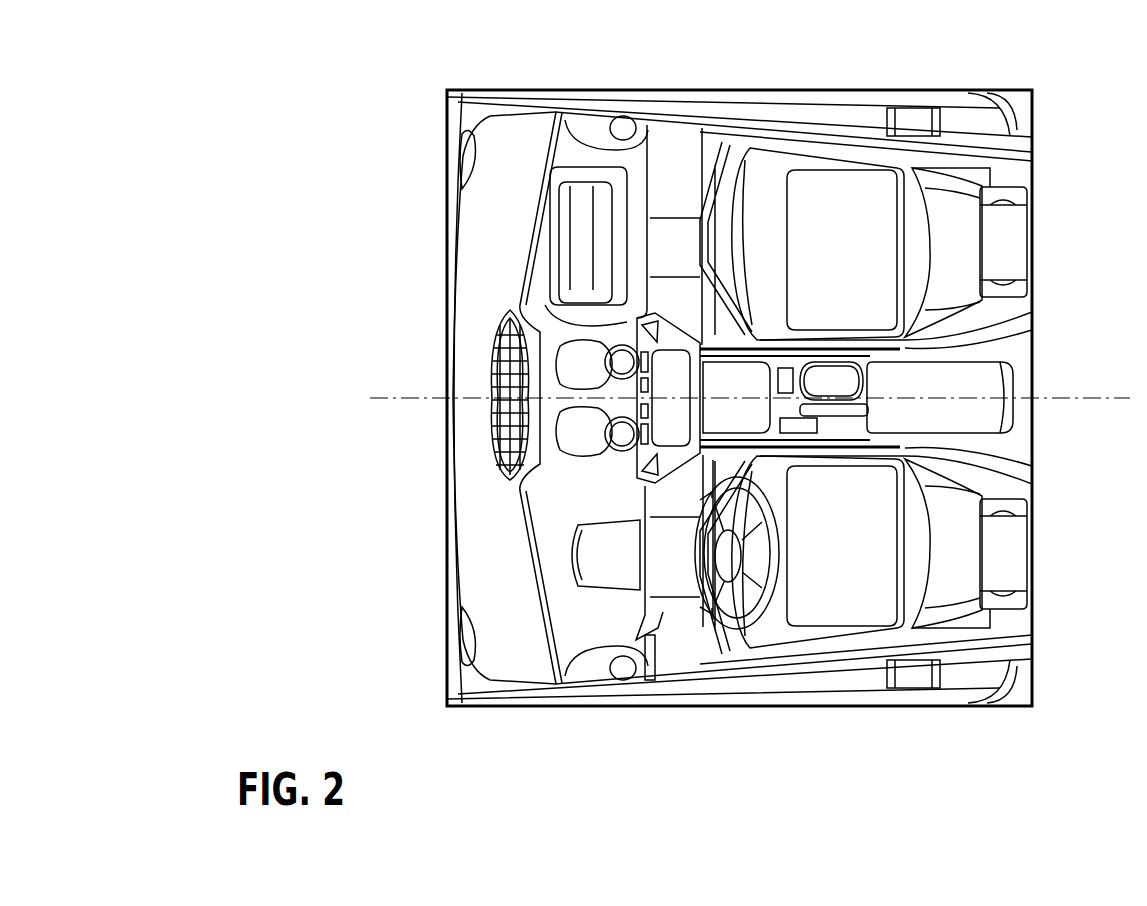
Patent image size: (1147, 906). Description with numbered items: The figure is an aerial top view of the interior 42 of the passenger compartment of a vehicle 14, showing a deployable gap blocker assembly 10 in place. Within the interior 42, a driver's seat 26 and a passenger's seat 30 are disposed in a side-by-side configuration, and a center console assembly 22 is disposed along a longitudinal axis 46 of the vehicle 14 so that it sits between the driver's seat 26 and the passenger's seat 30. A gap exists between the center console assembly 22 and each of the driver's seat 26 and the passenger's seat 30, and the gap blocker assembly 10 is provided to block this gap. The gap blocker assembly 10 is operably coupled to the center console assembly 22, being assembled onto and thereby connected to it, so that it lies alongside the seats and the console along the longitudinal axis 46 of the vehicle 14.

The deployable gap blocker assembly 10 is at (874, 340).
The vehicle 14 is at (385, 134).
The center console assembly 22 is at (870, 348).
The driver's seat 26 is at (832, 607).
The passenger's seat 30 is at (820, 198).
The interior of the passenger compartment 42 is at (672, 185).
The longitudinal axis 46 is at (1068, 396).